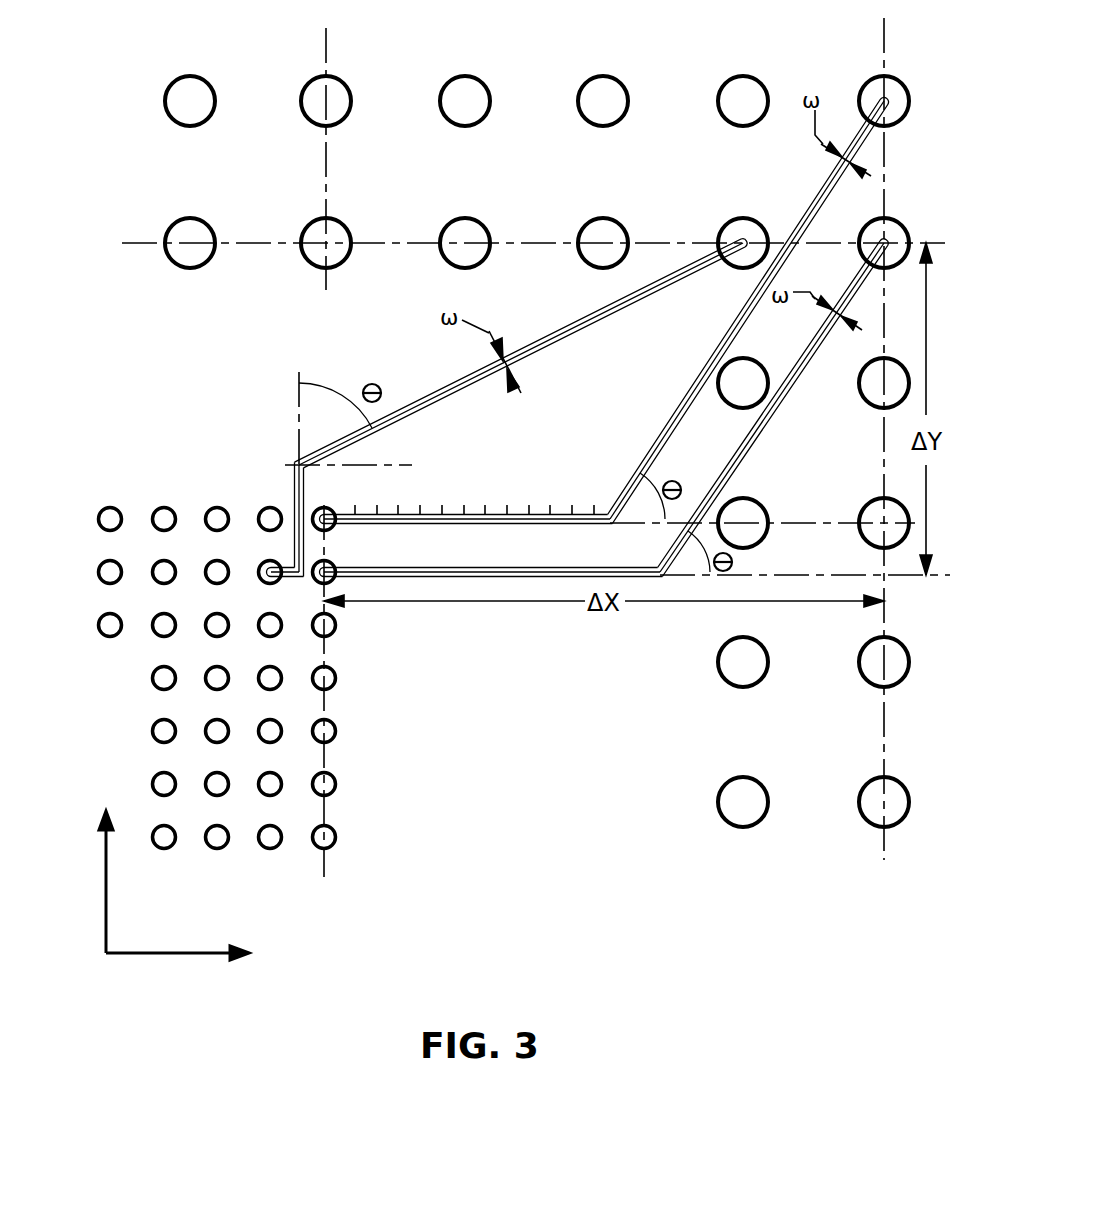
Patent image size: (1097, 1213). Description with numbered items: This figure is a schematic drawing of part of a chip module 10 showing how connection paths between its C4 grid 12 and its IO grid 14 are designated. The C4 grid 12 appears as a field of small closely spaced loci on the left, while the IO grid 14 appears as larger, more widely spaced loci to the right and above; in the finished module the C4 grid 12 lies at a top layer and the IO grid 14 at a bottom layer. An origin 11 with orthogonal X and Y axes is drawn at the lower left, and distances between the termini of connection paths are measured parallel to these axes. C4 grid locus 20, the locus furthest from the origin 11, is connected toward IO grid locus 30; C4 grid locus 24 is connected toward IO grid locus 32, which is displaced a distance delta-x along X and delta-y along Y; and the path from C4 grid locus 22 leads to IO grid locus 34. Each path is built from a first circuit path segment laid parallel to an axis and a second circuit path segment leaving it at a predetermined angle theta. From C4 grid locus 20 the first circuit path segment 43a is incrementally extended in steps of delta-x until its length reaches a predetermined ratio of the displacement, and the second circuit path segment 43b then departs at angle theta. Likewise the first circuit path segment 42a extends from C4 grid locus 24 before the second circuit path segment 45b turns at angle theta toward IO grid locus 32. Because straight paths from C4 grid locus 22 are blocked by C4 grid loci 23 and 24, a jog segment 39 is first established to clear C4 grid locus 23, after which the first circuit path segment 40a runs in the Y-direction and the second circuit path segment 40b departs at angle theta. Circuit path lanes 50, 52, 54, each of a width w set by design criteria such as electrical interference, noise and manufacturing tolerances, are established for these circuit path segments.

The chip module 10 is at (511, 891).
The origin 11 is at (106, 956).
The C4 grid 12 is at (292, 890).
The IO grid 14 is at (797, 850).
The C4 grid locus 20 is at (335, 510).
The C4 grid locus 22 is at (262, 570).
The C4 grid locus 23 is at (266, 506).
The C4 grid locus 24 is at (322, 588).
The IO grid locus 30 is at (876, 80).
The IO grid locus 32 is at (893, 218).
The IO grid locus 34 is at (745, 218).
The jog segment 39 is at (292, 580).
The first circuit path segment 40a is at (295, 482).
The second circuit path segment 40b is at (565, 335).
The first circuit path segment 42a is at (508, 570).
The first circuit path segment 43a is at (500, 517).
The second circuit path segment 43b is at (705, 372).
The second circuit path segment 45b is at (762, 428).
The circuit path lane 50 is at (660, 278).
The circuit path lane 52 is at (672, 412).
The circuit path lane 54 is at (750, 455).